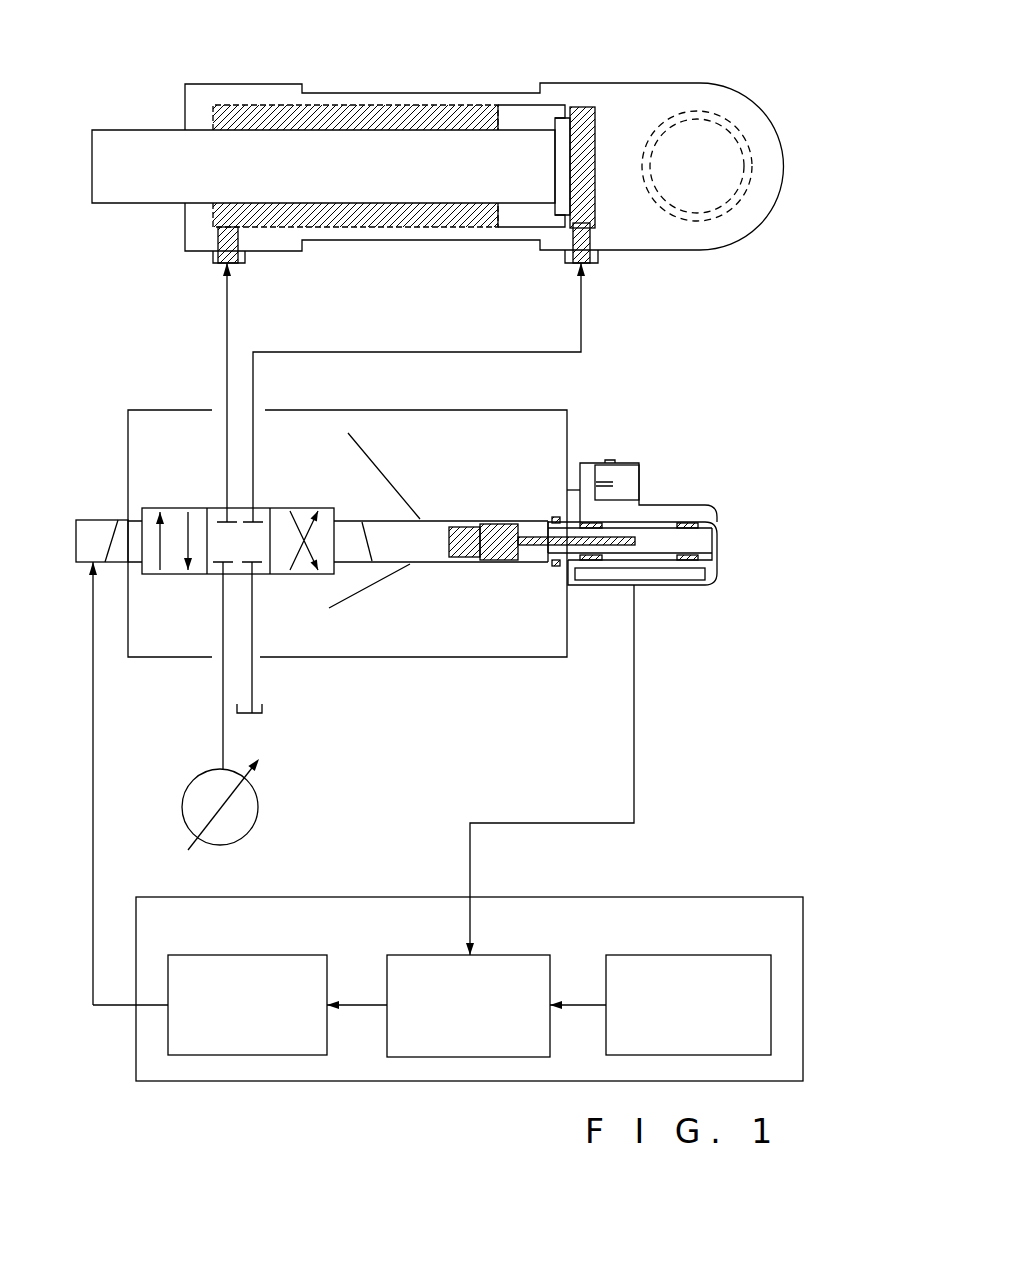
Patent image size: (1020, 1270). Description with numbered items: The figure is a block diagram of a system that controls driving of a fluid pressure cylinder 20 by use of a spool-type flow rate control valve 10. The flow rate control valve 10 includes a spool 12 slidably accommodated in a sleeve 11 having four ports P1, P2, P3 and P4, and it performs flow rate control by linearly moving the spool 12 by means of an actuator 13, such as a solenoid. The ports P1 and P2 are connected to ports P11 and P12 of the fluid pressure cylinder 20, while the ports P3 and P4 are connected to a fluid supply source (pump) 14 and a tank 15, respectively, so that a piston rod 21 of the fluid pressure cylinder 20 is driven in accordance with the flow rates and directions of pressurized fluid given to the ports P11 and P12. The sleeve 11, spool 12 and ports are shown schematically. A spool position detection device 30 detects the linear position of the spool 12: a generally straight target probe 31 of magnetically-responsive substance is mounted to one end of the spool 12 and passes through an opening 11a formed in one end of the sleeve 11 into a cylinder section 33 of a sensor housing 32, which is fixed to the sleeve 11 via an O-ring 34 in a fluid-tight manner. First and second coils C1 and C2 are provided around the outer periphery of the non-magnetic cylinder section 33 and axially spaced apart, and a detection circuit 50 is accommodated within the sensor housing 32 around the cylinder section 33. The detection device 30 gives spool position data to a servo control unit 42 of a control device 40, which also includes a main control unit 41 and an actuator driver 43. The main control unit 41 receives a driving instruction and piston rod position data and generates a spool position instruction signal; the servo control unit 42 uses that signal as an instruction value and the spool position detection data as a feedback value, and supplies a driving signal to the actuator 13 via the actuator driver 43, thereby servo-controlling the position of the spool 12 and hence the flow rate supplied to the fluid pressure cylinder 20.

The spool-type flow rate control valve 10 is at (347, 561).
The sleeve 11 is at (510, 410).
The opening 11a is at (533, 525).
The spool 12 is at (383, 530).
The actuator 13 is at (95, 530).
The fluid supply source (pump) 14 is at (258, 808).
The tank 15 is at (262, 712).
The fluid pressure cylinder 20 is at (632, 64).
The piston rod 21 is at (130, 140).
The spool position detection device 30 is at (646, 569).
The target probe 31 is at (605, 548).
The sensor housing 32 is at (655, 505).
The cylinder section 33 is at (665, 522).
The O-ring 34 is at (556, 567).
The control device 40 is at (448, 833).
The main control unit 41 is at (690, 955).
The servo control unit 42 is at (511, 955).
The actuator driver 43 is at (251, 955).
The detection circuit 50 is at (667, 576).
The first coil C1 is at (590, 561).
The second coil C2 is at (698, 523).
The port P1 is at (201, 491).
The port P2 is at (275, 491).
The port P3 is at (201, 593).
The port P4 is at (275, 593).
The port P11 is at (254, 391).
The port P12 is at (445, 391).